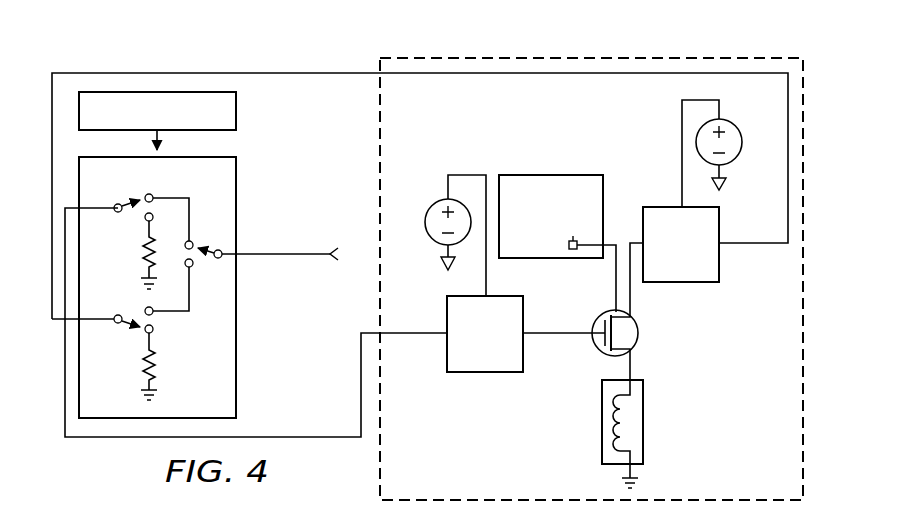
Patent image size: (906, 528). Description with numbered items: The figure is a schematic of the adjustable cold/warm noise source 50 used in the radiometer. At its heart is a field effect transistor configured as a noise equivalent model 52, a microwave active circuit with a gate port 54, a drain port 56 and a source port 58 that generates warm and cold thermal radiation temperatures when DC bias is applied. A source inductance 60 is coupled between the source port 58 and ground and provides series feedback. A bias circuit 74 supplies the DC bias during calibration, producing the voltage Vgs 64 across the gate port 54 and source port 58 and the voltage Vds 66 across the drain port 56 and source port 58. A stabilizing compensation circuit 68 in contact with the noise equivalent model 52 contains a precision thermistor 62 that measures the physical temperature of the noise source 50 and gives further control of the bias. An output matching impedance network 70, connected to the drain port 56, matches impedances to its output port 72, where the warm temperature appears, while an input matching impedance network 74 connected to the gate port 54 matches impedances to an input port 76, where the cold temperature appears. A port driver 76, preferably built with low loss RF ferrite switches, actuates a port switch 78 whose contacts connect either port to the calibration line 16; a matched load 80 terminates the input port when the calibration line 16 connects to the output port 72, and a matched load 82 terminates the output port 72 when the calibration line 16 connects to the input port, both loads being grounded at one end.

The adjustable cold/warm noise source 50 is at (127, 455).
The port driver 76 is at (238, 110).
The port switch 78 is at (237, 310).
The matched load 80 is at (143, 245).
The matched load 82 is at (143, 358).
The calibration line 16 is at (299, 256).
The bias circuit 74 is at (434, 205).
The voltage Vgs 64 is at (434, 243).
The stabilizing compensation circuit 68 is at (550, 175).
The precision thermistor 62 is at (568, 245).
The noise equivalent model 52 is at (654, 334).
The gate port 54 is at (592, 338).
The drain port 56 is at (634, 313).
The source port 58 is at (634, 354).
The source inductance 60 is at (602, 423).
The output matching impedance network 70 is at (657, 207).
The voltage Vds 66 is at (728, 162).
The output port 72 is at (722, 246).